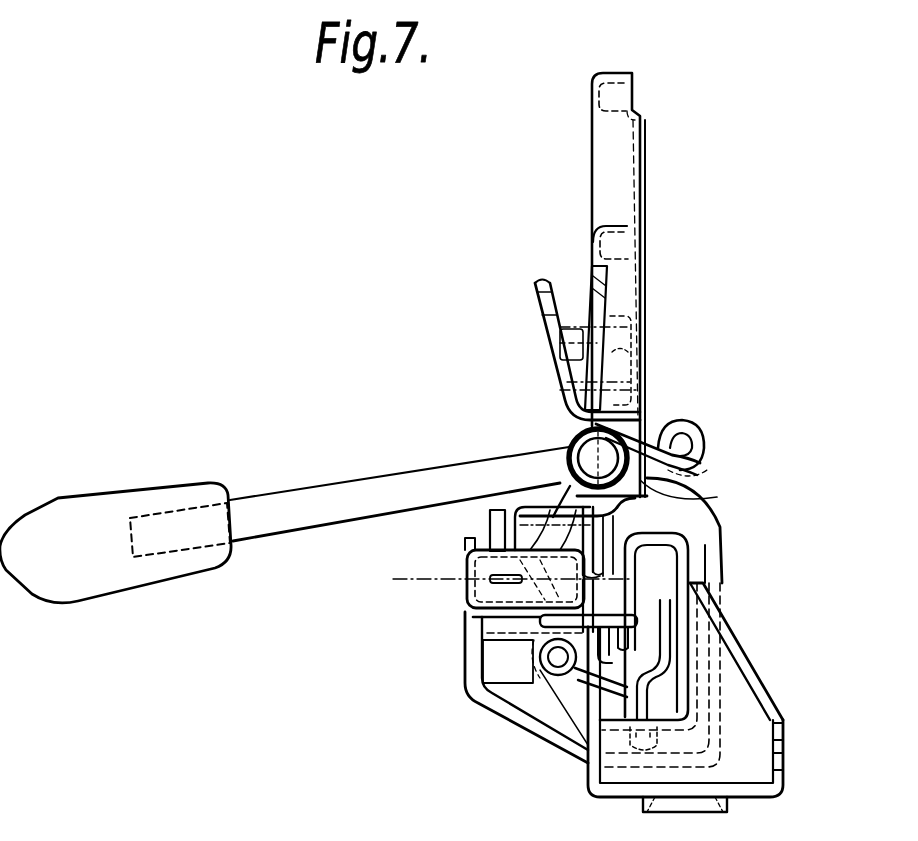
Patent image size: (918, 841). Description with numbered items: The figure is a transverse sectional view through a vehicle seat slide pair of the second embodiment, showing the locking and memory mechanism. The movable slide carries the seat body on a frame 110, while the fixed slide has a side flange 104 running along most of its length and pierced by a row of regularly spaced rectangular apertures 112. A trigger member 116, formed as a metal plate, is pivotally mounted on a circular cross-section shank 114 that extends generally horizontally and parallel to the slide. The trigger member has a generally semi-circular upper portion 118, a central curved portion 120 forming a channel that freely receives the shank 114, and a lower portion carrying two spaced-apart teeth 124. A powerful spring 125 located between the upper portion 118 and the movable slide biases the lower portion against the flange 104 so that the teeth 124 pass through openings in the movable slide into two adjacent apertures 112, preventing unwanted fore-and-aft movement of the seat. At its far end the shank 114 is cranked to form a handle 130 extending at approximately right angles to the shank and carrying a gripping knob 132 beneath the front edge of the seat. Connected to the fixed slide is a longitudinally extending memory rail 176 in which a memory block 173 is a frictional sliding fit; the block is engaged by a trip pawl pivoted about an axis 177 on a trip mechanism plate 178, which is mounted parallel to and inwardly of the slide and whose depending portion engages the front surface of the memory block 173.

The side flange 104 is at (633, 645).
The frame 110 is at (617, 179).
The rectangular apertures 112 is at (577, 673).
The shank 114 is at (606, 447).
The trigger member 116 is at (565, 413).
The upper portion 118 is at (557, 380).
The central curved portion 120 is at (700, 474).
The teeth 124 is at (660, 613).
The spring 125 is at (613, 313).
The handle 130 is at (282, 500).
The gripping knob 132 is at (93, 510).
The memory block 173 is at (497, 673).
The memory rail 176 is at (556, 674).
The axis 177 is at (415, 584).
The trip mechanism plate 178 is at (488, 518).